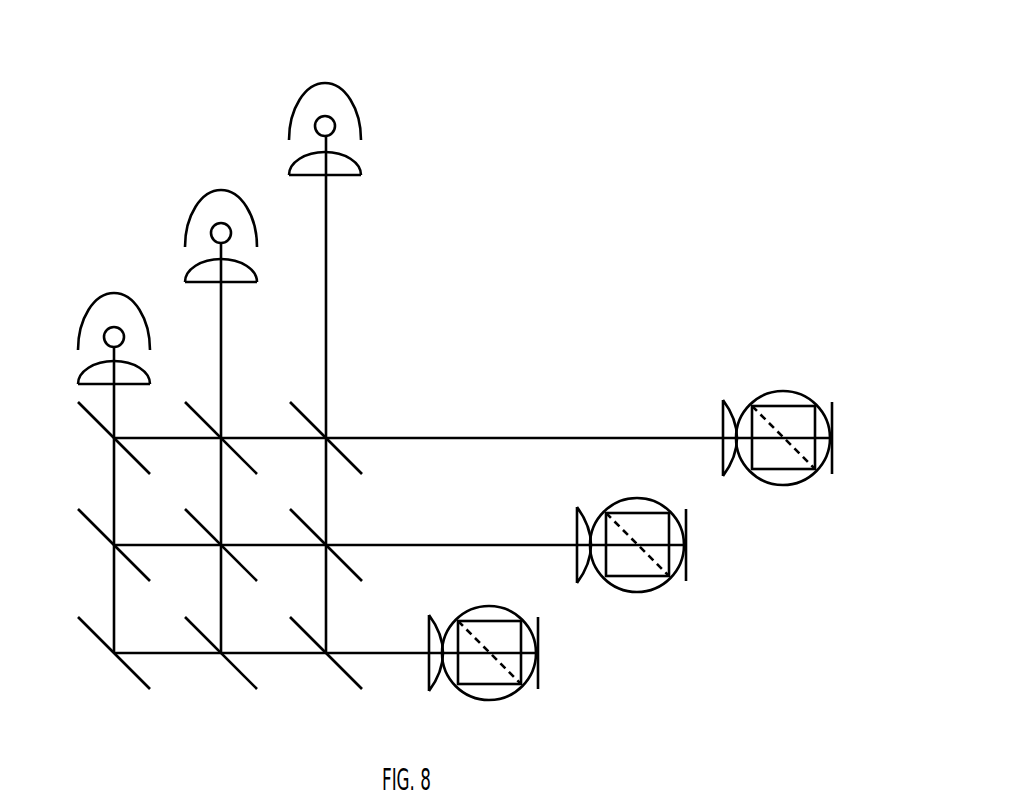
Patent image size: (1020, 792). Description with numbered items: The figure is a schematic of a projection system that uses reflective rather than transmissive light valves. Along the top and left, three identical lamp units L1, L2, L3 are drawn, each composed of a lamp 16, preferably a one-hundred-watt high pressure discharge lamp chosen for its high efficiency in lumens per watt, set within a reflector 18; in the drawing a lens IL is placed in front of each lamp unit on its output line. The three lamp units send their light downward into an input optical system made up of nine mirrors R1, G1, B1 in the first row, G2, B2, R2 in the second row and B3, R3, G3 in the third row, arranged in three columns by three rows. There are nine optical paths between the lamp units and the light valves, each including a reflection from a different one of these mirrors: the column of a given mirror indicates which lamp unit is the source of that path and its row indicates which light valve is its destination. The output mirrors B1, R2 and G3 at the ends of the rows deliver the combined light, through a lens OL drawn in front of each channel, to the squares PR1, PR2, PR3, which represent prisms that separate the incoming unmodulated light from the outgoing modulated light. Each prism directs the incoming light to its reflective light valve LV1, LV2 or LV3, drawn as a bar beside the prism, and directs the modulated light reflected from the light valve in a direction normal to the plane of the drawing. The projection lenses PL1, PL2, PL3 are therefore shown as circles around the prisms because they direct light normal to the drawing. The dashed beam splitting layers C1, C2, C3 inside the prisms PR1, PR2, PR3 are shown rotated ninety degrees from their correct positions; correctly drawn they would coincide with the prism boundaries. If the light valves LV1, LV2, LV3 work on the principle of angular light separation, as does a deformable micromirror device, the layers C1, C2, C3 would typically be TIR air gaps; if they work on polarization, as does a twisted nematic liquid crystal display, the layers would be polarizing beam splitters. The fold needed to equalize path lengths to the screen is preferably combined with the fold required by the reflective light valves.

The lamp 16 is at (186, 208).
The reflector 18 is at (245, 212).
The illumination lens IL is at (243, 293).
The lamp unit L1 is at (92, 259).
The lamp unit L2 is at (190, 155).
The lamp unit L3 is at (294, 50).
The mirror R1 is at (103, 438).
The mirror G1 is at (246, 443).
The mirror B1 is at (351, 443).
The mirror B2 is at (198, 539).
The mirror R2 is at (303, 539).
The mirror G2 is at (102, 545).
The mirror B3 is at (102, 653).
The mirror R3 is at (221, 658).
The mirror G3 is at (326, 658).
The objective lens OL is at (564, 532).
The beam splitting layer C1 is at (816, 425).
The beam splitting layer C2 is at (670, 532).
The beam splitting layer C3 is at (522, 640).
The projection lens PL1 is at (801, 406).
The projection lens PL2 is at (655, 513).
The projection lens PL3 is at (507, 621).
The prism PR1 is at (811, 459).
The prism PR2 is at (665, 566).
The prism PR3 is at (517, 674).
The light valve LV1 is at (864, 429).
The light valve LV2 is at (718, 536).
The light valve LV3 is at (570, 644).